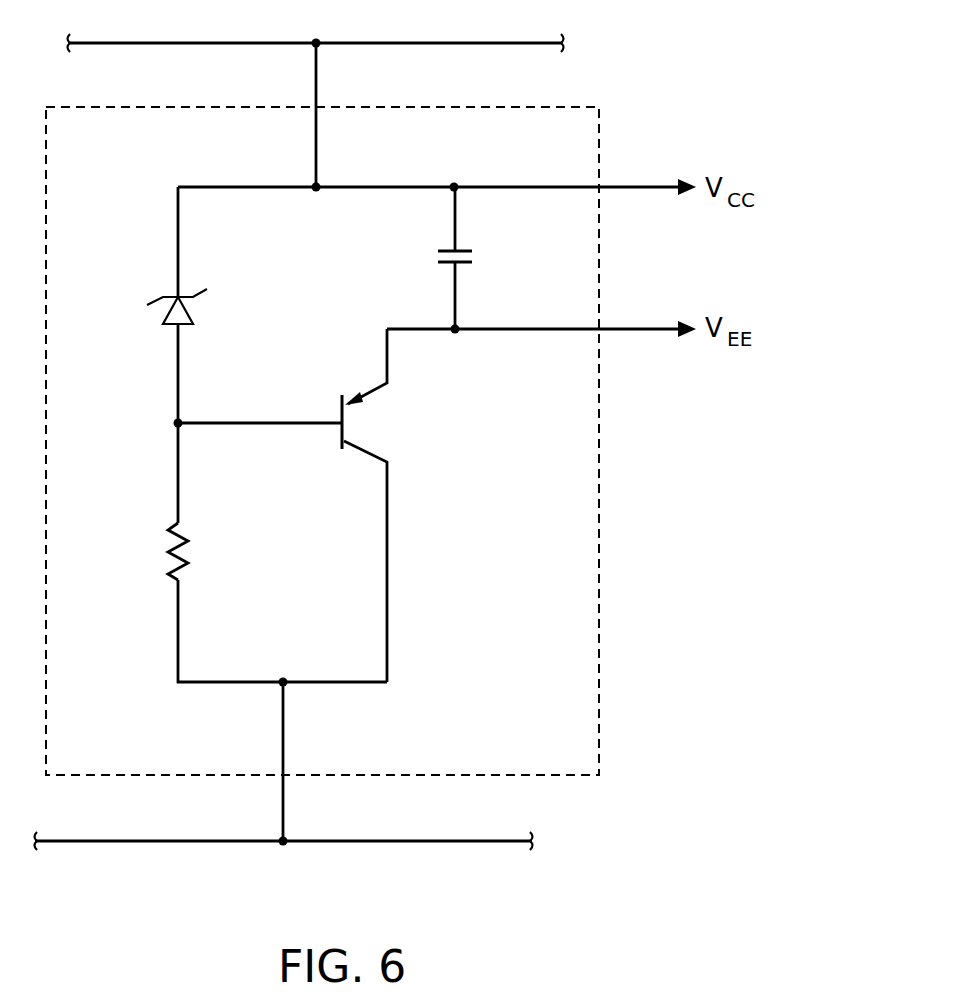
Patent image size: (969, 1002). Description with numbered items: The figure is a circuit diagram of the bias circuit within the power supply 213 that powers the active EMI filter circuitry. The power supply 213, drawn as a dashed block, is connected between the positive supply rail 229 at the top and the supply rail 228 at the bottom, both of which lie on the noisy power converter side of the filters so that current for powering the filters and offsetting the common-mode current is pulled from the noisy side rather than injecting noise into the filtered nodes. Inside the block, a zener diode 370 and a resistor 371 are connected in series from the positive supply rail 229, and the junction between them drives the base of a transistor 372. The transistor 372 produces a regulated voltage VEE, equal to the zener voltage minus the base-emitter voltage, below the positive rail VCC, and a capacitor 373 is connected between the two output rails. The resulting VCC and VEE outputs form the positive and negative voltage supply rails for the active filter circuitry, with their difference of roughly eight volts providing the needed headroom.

The positive supply rail 229 is at (194, 43).
The power supply 213 is at (576, 107).
The zener diode 370 is at (190, 314).
The capacitor 373 is at (473, 258).
The transistor 372 is at (338, 432).
The resistor 371 is at (190, 549).
The supply rail 228 is at (128, 843).